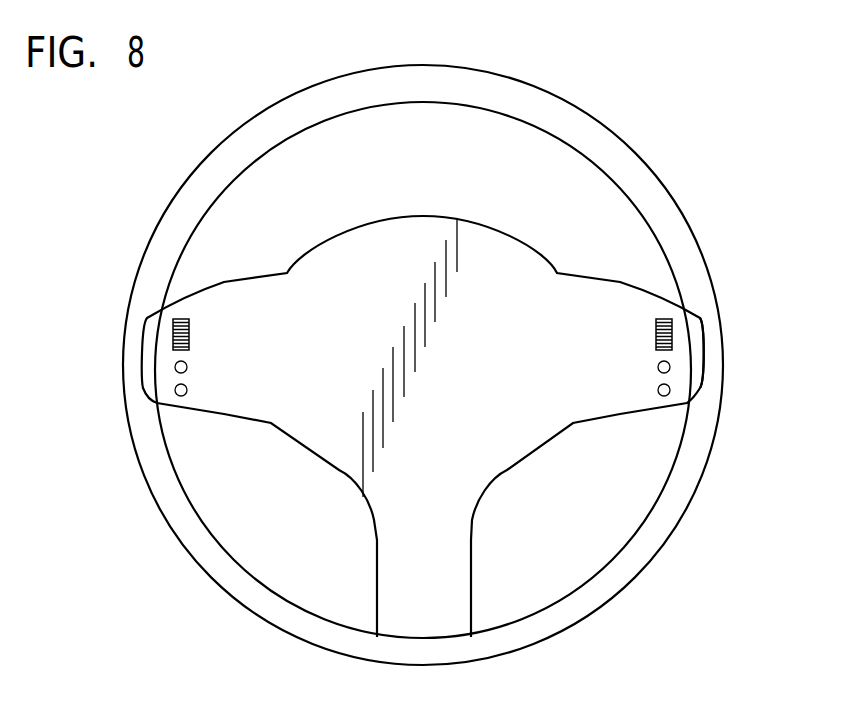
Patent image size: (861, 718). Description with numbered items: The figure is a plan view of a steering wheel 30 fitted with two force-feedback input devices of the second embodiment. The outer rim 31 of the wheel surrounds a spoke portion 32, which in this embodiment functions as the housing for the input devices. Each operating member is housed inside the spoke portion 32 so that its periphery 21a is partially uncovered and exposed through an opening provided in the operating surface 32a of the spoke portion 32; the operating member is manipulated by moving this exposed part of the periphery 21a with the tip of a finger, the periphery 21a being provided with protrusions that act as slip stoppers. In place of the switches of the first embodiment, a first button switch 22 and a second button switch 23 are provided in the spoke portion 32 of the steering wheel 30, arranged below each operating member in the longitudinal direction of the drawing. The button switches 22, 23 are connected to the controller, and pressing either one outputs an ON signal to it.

The steering wheel 30 is at (568, 102).
The rim 31 is at (641, 182).
The spoke portion 32 is at (602, 397).
The operating surface 32a is at (692, 378).
The periphery 21a is at (173, 329).
The first button switch 22 is at (175, 367).
The second button switch 23 is at (178, 396).